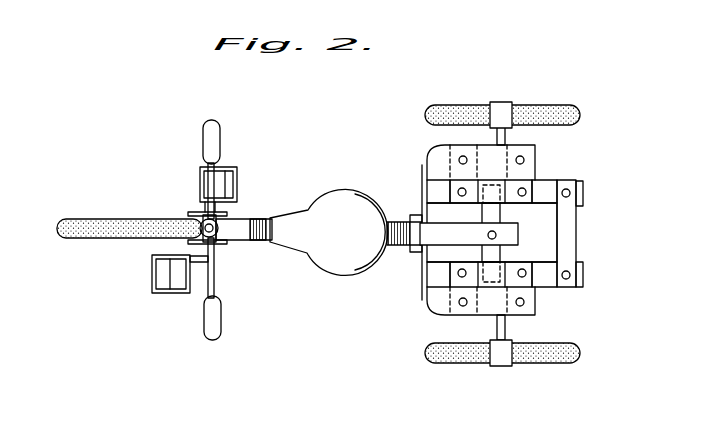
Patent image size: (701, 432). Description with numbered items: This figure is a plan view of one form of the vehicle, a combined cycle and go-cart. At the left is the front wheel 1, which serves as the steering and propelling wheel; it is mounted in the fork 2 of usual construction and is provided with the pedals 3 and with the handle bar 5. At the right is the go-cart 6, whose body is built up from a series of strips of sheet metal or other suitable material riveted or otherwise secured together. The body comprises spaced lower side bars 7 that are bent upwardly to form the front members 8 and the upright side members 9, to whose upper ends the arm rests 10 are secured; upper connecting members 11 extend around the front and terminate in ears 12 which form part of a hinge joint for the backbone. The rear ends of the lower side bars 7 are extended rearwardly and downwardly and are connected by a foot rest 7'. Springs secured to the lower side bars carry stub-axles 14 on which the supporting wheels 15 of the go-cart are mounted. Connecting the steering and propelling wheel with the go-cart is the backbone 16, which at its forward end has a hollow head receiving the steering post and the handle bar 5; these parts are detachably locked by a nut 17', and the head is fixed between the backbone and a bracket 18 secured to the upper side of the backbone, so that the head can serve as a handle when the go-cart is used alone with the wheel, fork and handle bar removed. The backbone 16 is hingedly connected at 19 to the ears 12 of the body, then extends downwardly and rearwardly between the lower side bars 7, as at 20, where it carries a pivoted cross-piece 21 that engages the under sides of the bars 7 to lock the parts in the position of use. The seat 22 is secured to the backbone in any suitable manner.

The front wheel 1 is at (97, 211).
The fork 2 is at (202, 216).
The pedals 3 is at (238, 186).
The handle bar 5 is at (221, 151).
The go-cart 6 is at (577, 220).
The side bars 7 is at (549, 237).
The foot rest 7' is at (591, 234).
The front members 8 is at (426, 185).
The upright side members 9 is at (457, 290).
The arm rests 10 is at (516, 152).
The upper connecting members 11 is at (421, 166).
The ears 12 is at (395, 221).
The stub-axles 14 is at (496, 134).
The supporting wheels 15 is at (538, 108).
The backbone 16 is at (258, 219).
The nut 17' is at (228, 256).
The bracket 18 is at (234, 221).
The hinge connection 19 is at (385, 237).
The rearward extension of backbone 20 is at (469, 234).
The pivoted cross-piece 21 is at (500, 212).
The seat 22 is at (329, 232).